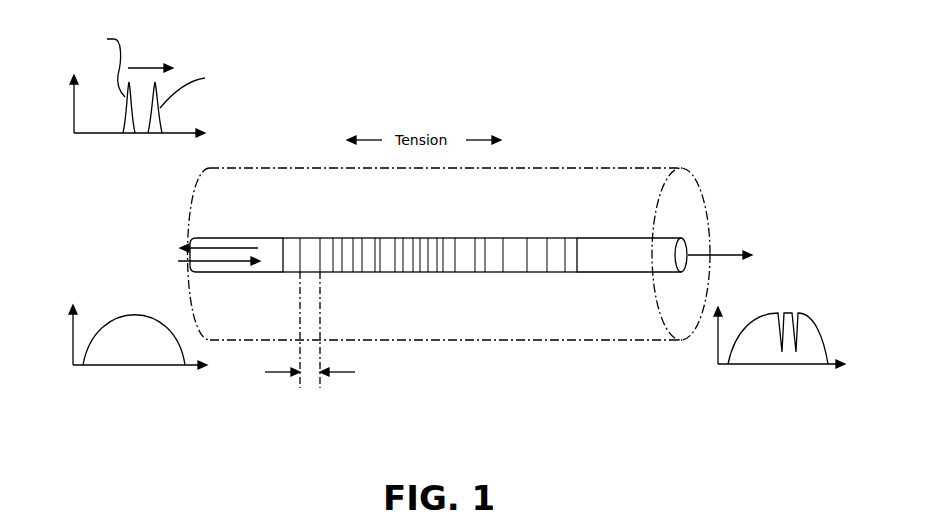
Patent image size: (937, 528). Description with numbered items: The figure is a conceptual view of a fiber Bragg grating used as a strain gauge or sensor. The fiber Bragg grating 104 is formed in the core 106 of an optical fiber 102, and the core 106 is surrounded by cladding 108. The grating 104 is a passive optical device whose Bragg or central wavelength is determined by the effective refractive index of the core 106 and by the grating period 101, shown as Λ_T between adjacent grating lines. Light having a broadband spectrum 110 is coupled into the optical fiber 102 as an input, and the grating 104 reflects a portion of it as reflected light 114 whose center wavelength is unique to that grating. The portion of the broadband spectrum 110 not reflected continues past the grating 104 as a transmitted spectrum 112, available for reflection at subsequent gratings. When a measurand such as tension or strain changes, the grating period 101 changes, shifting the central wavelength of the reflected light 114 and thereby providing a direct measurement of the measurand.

The grating period 101 is at (345, 372).
The optical fiber 102 is at (637, 161).
The fiber Bragg grating 104 is at (531, 273).
The core 106 is at (670, 242).
The cladding 108 is at (690, 187).
The broadband spectrum 110 is at (74, 367).
The transmitted spectrum 112 is at (718, 366).
The reflected light 114 is at (74, 136).